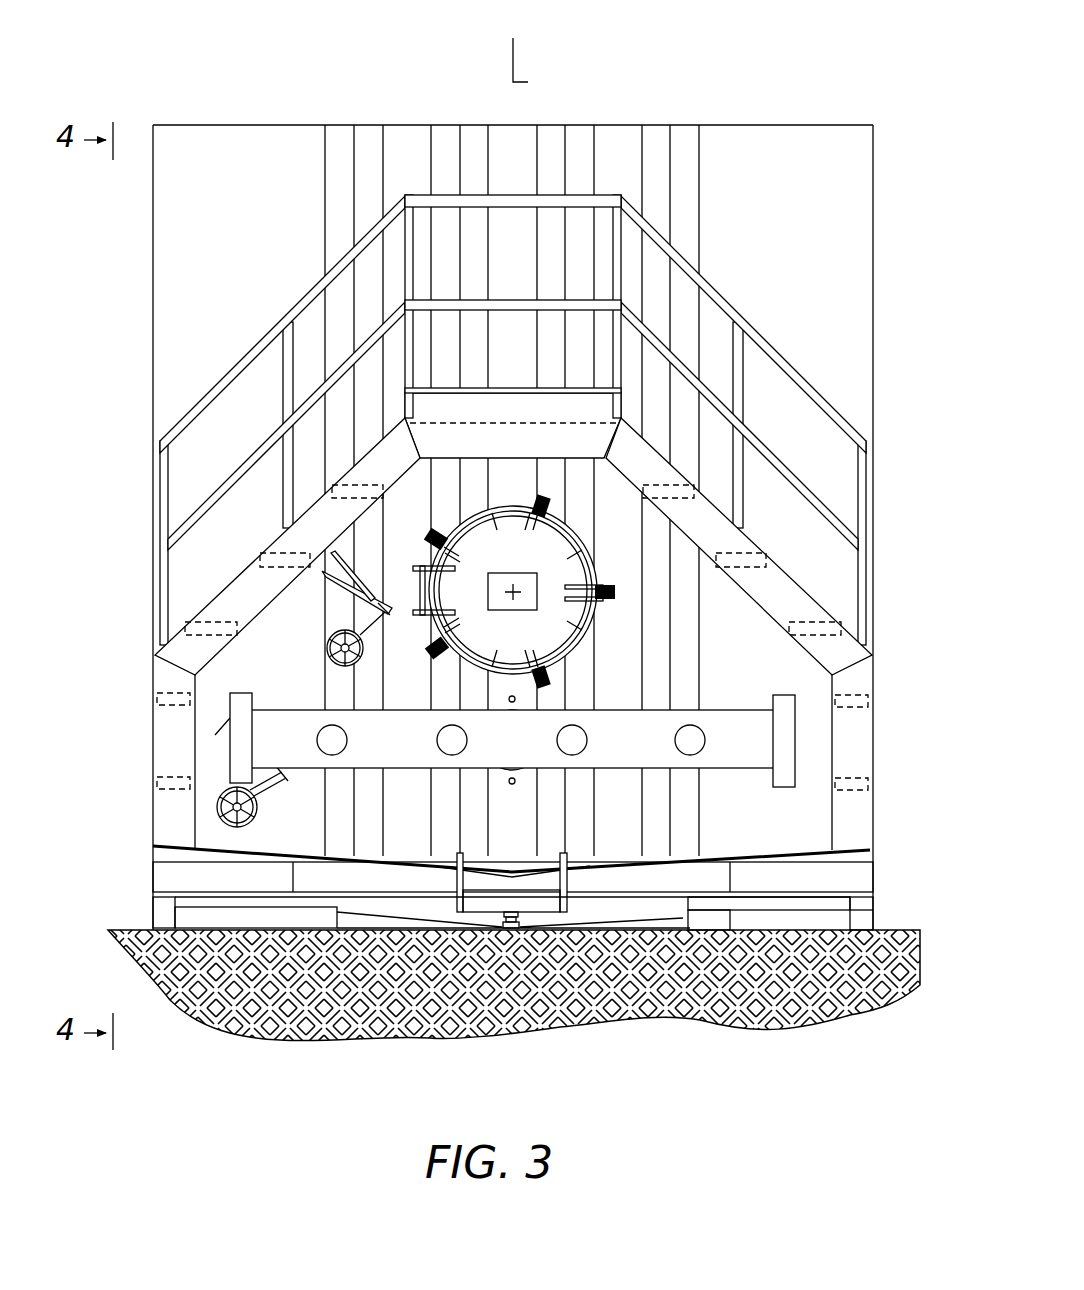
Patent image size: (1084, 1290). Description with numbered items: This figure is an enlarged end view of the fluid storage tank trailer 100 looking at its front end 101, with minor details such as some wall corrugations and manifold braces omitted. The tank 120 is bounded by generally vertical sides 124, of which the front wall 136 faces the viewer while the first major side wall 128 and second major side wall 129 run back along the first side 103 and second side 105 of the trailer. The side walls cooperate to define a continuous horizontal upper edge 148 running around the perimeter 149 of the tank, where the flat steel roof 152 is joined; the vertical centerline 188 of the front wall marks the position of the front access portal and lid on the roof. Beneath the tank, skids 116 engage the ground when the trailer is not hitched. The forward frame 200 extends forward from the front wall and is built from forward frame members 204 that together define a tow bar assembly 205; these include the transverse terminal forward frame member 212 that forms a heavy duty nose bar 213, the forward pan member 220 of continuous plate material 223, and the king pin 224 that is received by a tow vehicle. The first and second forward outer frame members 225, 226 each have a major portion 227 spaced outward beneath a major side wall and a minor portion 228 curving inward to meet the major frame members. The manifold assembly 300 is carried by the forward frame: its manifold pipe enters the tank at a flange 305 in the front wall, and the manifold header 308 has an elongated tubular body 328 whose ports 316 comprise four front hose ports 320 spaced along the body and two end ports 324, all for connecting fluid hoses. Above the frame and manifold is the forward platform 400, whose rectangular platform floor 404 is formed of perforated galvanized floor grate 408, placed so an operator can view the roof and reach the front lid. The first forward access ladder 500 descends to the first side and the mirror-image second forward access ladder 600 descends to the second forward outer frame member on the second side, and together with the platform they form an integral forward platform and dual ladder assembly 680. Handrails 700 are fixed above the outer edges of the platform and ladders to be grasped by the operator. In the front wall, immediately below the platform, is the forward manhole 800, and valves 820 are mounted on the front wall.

The fluid storage tank trailer 100 is at (512, 1045).
The front end 101 is at (150, 857).
The first side 103 is at (110, 527).
The second side 105 is at (915, 497).
The skids 116 is at (140, 912).
The tank 120 is at (292, 143).
The sides 124 is at (152, 136).
The first major side wall 128 is at (151, 207).
The second major side wall 129 is at (877, 160).
The front wall 136 is at (233, 143).
The upper edge 148 is at (412, 431).
The perimeter 149 is at (412, 431).
The roof 152 is at (184, 122).
The vertical centerline 188 is at (544, 47).
The forward frame 200 is at (515, 927).
The forward frame members 204 is at (472, 821).
The tow bar assembly 205 is at (140, 845).
The terminal forward frame member 212 is at (769, 972).
The heavy duty nose bar 213 is at (711, 882).
The forward pan member 220 is at (494, 985).
The continuous plate material 223 is at (395, 905).
The king pin 224 is at (507, 925).
The first forward outer frame member 225 is at (179, 869).
The second forward outer frame member 226 is at (878, 857).
The major portion 227 is at (140, 888).
The minor portion 228 is at (200, 884).
The manifold assembly 300 is at (718, 702).
The flange 305 is at (523, 703).
The manifold header 308 is at (758, 738).
The ports 316 is at (511, 743).
The front hose ports 320 is at (383, 745).
The end ports 324 is at (798, 778).
The tubular body 328 is at (283, 708).
The forward platform 400 is at (513, 350).
The platform floor 404 is at (457, 426).
The floor grate 408 is at (513, 385).
The first forward access ladder 500 is at (238, 597).
The second forward access ladder 600 is at (875, 668).
The integral forward platform and dual ladder assembly 680 is at (140, 640).
The handrails 700 is at (721, 297).
The forward manhole 800 is at (538, 561).
The valves 820 is at (328, 655).